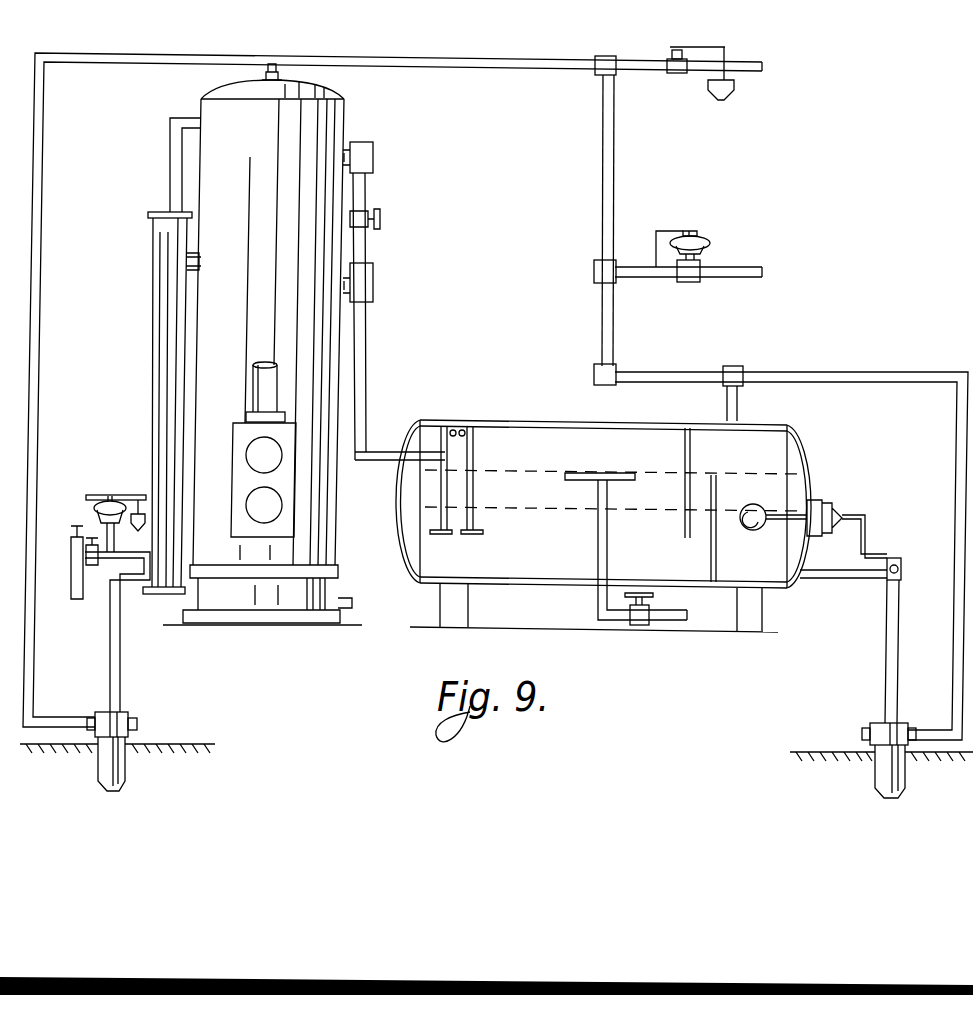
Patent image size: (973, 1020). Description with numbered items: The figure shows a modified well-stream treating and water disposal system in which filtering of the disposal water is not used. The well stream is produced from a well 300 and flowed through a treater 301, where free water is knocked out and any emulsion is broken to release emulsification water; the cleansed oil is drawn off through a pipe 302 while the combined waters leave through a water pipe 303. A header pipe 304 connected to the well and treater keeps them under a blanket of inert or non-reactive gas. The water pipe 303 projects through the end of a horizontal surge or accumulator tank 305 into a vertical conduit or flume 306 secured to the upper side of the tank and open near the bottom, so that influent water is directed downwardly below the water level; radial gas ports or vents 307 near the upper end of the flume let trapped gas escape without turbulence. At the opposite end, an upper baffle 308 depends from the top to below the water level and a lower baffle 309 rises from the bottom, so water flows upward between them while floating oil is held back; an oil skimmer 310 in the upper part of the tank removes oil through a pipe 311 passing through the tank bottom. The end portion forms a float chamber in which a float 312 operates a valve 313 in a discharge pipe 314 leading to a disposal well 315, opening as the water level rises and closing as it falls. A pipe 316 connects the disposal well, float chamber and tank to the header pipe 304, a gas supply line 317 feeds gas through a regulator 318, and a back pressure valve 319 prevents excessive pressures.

The well 300 is at (130, 763).
The treater 301 is at (332, 346).
The pipe 302 is at (100, 558).
The water pipe 303 is at (386, 451).
The header pipe 304 is at (165, 67).
The horizontal surge or accumulator tank 305 is at (558, 420).
The vertical conduit or flume 306 is at (470, 494).
The radial gas ports or vents 307 is at (470, 439).
The upper baffle 308 is at (690, 453).
The lower baffle 309 is at (716, 481).
The oil skimmer 310 is at (603, 473).
The pipe 311 is at (598, 603).
The float 312 is at (750, 532).
The valve 313 is at (927, 552).
The discharge pipe 314 is at (853, 579).
The disposal well 315 is at (870, 782).
The pipe 316 is at (601, 310).
The gas supply line 317 is at (742, 269).
The regulator 318 is at (688, 283).
The back pressure valve 319 is at (672, 86).